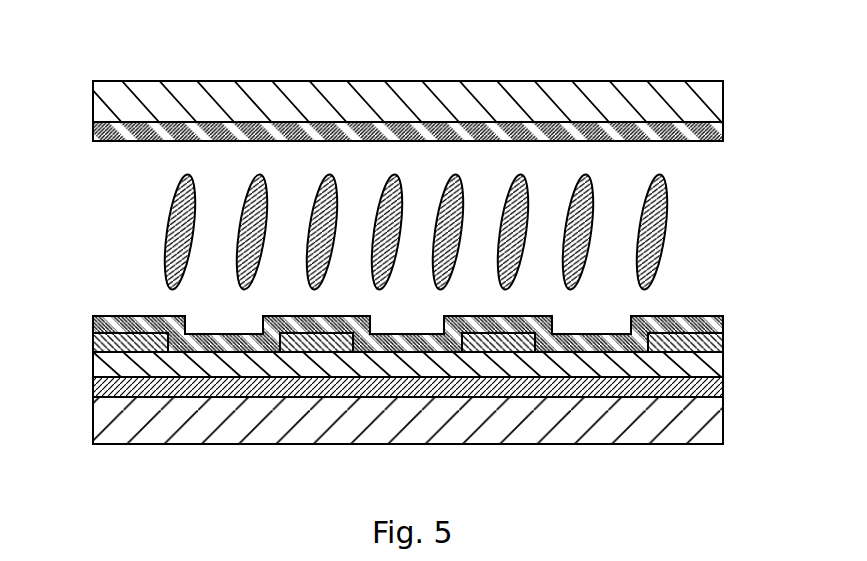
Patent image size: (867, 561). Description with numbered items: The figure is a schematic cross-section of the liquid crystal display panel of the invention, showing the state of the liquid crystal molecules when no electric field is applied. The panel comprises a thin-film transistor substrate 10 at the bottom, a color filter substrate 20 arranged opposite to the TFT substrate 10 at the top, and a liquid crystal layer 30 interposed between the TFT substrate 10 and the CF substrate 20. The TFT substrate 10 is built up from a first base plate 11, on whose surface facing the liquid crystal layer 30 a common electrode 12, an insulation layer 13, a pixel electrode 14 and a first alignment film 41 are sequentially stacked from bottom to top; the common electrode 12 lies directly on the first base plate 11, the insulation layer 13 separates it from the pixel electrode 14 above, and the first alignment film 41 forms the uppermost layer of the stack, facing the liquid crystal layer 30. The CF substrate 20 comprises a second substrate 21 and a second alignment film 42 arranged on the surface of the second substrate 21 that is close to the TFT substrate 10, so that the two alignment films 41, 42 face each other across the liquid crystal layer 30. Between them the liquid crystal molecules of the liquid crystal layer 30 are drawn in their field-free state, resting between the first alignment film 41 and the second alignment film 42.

The thin-film transistor substrate 10 is at (80, 315).
The first base plate 11 is at (677, 428).
The common electrode 12 is at (700, 387).
The insulation layer 13 is at (688, 365).
The pixel electrode 14 is at (122, 331).
The first alignment film 41 is at (683, 316).
The color filter substrate 20 is at (80, 73).
The second substrate 21 is at (358, 97).
The second alignment film 42 is at (477, 128).
The liquid crystal layer 30 is at (663, 231).